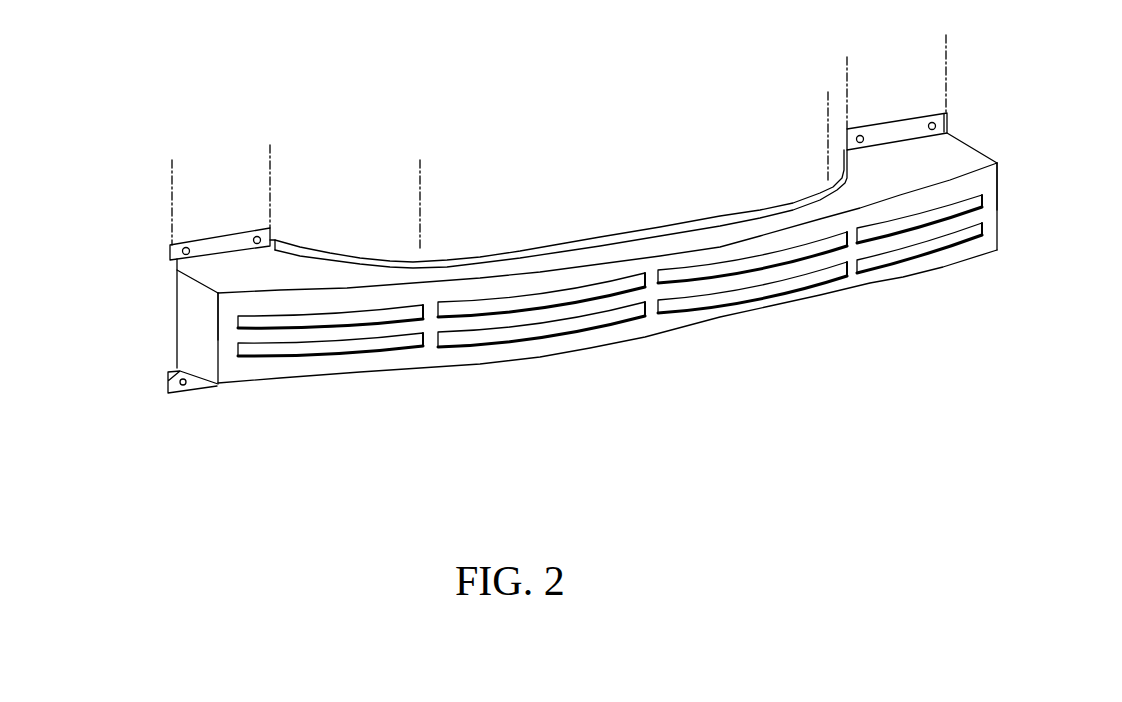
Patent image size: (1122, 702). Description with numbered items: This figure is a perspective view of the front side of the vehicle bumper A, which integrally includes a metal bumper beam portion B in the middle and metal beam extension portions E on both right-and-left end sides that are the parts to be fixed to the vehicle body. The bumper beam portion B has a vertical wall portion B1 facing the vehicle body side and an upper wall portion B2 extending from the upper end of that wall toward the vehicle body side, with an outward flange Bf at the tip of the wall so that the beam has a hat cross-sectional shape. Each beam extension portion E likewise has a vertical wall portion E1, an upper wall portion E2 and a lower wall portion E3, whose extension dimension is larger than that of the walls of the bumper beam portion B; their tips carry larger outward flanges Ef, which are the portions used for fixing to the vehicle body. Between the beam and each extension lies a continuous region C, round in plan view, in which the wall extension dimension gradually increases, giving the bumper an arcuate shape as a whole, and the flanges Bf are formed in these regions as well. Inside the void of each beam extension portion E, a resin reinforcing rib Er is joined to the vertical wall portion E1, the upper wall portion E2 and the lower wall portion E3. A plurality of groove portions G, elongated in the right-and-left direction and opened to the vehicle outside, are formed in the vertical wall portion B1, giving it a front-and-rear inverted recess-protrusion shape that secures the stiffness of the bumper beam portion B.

The vehicle bumper A is at (637, 127).
The bumper beam portion B is at (832, 115).
The vertical wall portion B1 is at (595, 303).
The upper wall portion B2 is at (620, 255).
The outward flange Bf is at (500, 256).
The continuous region C is at (270, 160).
The beam extension portion E is at (270, 160).
The vertical wall portion E1 is at (232, 360).
The upper wall portion E2 is at (240, 275).
The lower wall portion E3 is at (178, 370).
The outward flange Ef is at (220, 246).
The reinforcing rib Er is at (180, 320).
The groove portion G is at (283, 318).